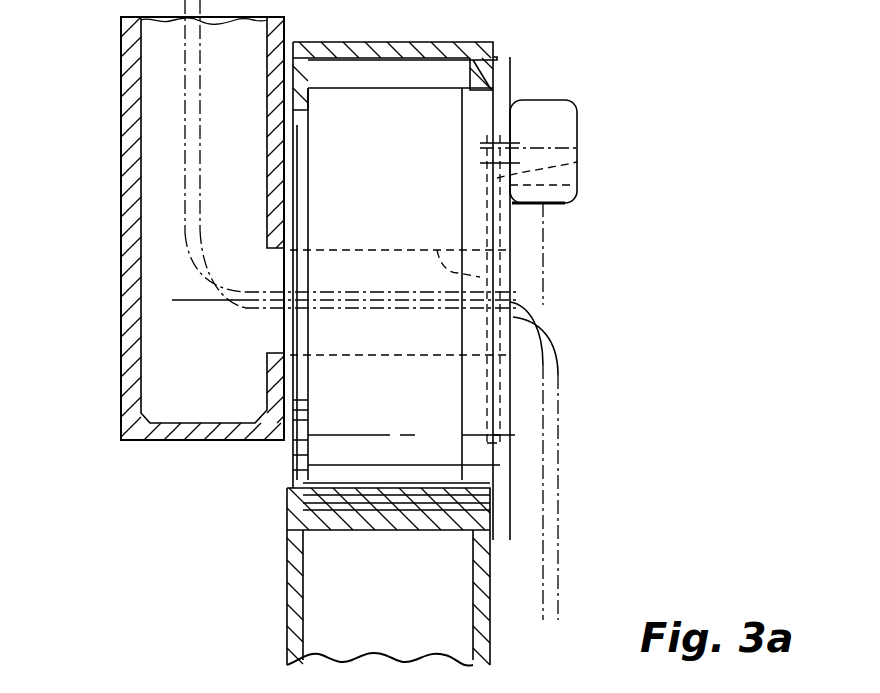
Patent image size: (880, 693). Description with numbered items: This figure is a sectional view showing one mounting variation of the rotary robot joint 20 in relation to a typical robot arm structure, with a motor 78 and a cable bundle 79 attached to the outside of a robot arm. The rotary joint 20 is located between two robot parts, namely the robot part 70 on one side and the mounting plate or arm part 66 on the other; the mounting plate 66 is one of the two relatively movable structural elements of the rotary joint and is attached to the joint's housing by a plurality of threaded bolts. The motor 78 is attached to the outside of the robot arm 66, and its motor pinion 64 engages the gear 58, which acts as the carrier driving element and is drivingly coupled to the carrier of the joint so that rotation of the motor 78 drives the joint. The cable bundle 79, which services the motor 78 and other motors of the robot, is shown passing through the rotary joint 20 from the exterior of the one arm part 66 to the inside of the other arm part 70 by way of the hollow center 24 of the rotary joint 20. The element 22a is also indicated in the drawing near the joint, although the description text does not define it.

The robot part 70 is at (121, 83).
The rotary robot joint 20 is at (377, 82).
The mounting plate 66 is at (440, 45).
The motor pinion 64 is at (503, 140).
The motor 78 is at (578, 104).
The gear 58 is at (578, 166).
The hollow center 24 is at (480, 277).
The contact 22a is at (505, 434).
The cable bundle 79 is at (558, 565).